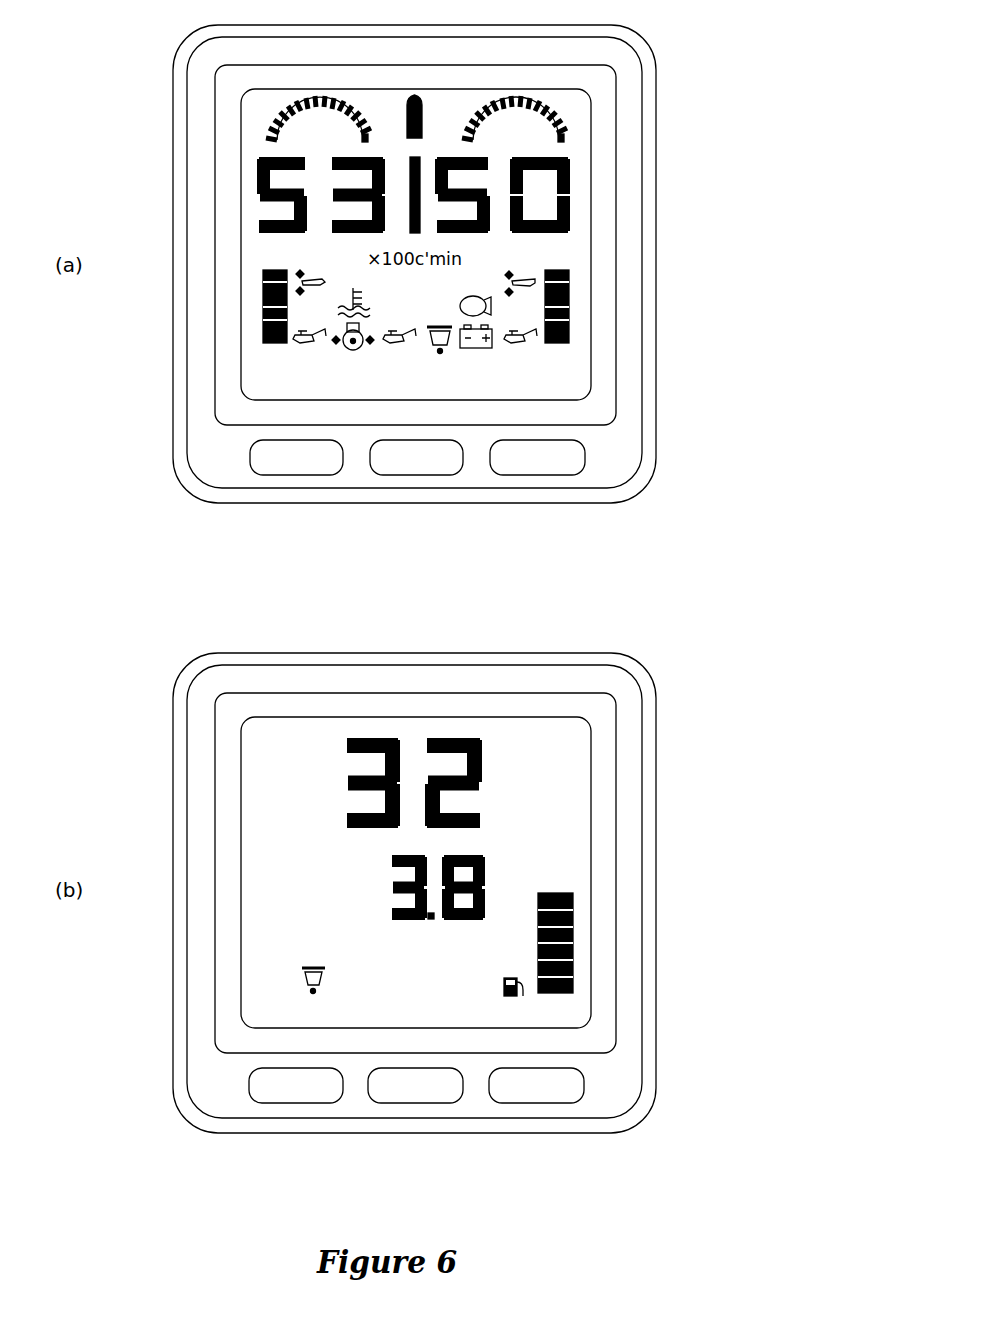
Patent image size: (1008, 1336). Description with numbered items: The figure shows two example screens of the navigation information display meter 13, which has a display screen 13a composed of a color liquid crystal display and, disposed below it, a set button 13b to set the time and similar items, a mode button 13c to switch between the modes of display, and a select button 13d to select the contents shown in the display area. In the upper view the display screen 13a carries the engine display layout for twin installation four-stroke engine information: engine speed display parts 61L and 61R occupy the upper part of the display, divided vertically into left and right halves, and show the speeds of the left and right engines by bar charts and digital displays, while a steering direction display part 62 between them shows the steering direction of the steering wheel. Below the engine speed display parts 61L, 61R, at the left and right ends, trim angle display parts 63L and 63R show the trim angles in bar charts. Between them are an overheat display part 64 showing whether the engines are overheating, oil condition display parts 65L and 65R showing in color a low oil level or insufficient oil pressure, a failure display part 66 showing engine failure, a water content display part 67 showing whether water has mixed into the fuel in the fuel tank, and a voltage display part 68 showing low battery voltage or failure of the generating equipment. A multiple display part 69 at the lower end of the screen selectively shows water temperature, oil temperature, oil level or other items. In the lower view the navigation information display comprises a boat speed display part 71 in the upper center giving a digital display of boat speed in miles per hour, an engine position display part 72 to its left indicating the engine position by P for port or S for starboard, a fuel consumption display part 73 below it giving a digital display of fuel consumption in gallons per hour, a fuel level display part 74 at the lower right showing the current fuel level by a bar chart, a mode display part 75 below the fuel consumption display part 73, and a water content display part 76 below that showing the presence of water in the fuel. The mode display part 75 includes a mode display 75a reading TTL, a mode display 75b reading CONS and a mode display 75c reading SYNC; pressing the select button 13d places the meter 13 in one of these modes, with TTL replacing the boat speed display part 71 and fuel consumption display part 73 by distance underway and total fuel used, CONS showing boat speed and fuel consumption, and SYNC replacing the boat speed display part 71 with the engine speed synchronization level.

The navigation information display meter 13 is at (583, 35).
The display screen 13a is at (603, 190).
The set button 13b is at (300, 475).
The mode button 13c is at (405, 475).
The select button 13d is at (535, 475).
The engine speed display part 61L is at (250, 152).
The engine speed display part 61R is at (580, 152).
The steering direction display part 62 is at (418, 97).
The trim angle display part 63L is at (263, 272).
The trim angle display part 63R is at (570, 293).
The overheat display part 64 is at (333, 304).
The oil condition display part 65L is at (300, 345).
The oil condition display part 65R is at (537, 345).
The failure display part 66 is at (352, 352).
The water content display part 67 is at (440, 354).
The voltage display part 68 is at (483, 348).
The multiple display part 69 is at (258, 395).
The boat speed display part 71 is at (490, 733).
The engine position display part 72 is at (253, 778).
The fuel consumption display part 73 is at (490, 867).
The fuel level display part 74 is at (573, 950).
The mode display part 75 is at (306, 942).
The mode display 75a is at (293, 928).
The mode display 75b is at (370, 957).
The mode display 75c is at (452, 957).
The water content display part 76 is at (300, 975).